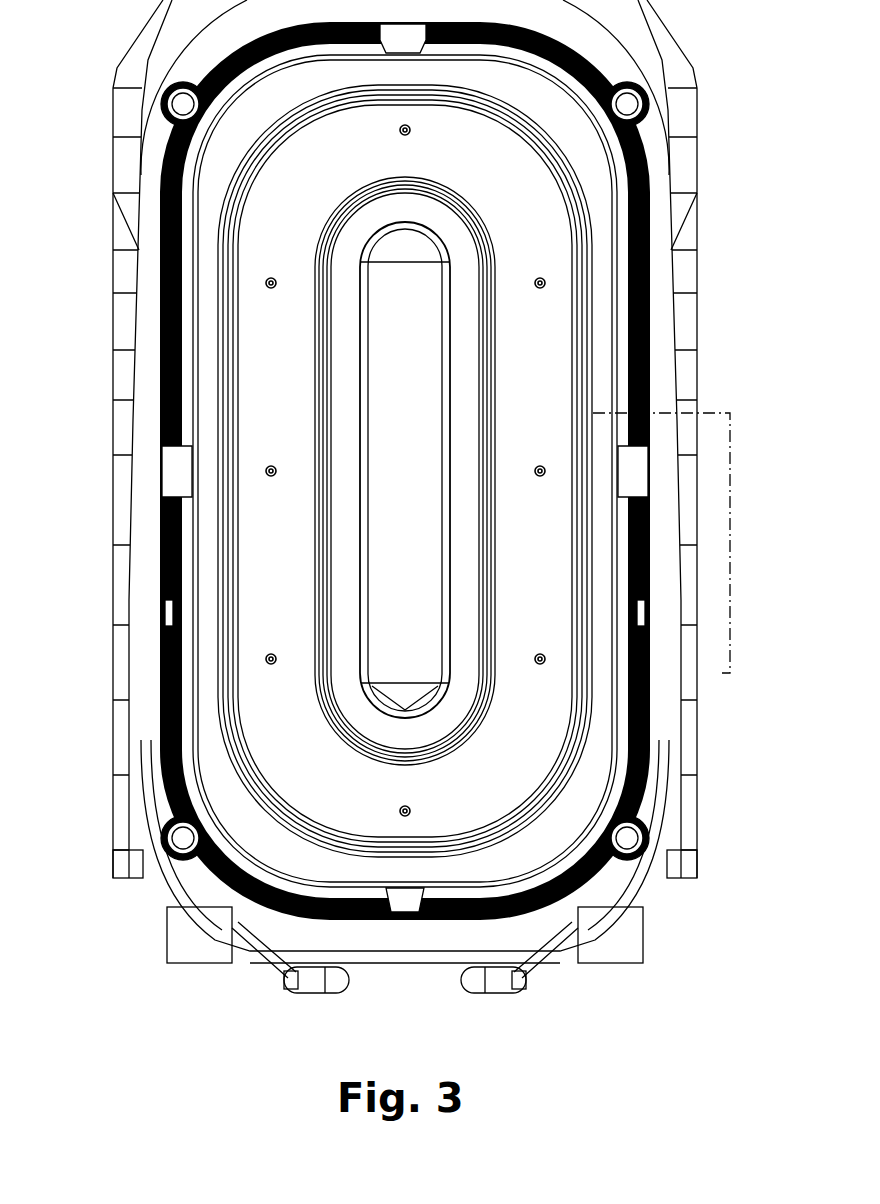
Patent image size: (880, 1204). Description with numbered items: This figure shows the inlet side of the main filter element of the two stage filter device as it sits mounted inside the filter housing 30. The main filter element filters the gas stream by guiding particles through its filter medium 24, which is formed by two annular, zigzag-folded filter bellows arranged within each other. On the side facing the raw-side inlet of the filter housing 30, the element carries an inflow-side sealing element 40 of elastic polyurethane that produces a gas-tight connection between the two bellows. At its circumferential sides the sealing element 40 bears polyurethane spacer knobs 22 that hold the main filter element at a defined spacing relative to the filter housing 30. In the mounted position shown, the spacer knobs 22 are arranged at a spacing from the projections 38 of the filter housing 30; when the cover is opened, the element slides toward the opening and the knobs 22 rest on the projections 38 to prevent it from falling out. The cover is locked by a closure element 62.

The spacer knobs 22 is at (420, 75).
The filter medium 24 is at (418, 508).
The filter housing 30 is at (156, 460).
The projections 38 is at (164, 612).
The inflow-side sealing element 40 is at (555, 453).
The closure element 62 is at (310, 1000).